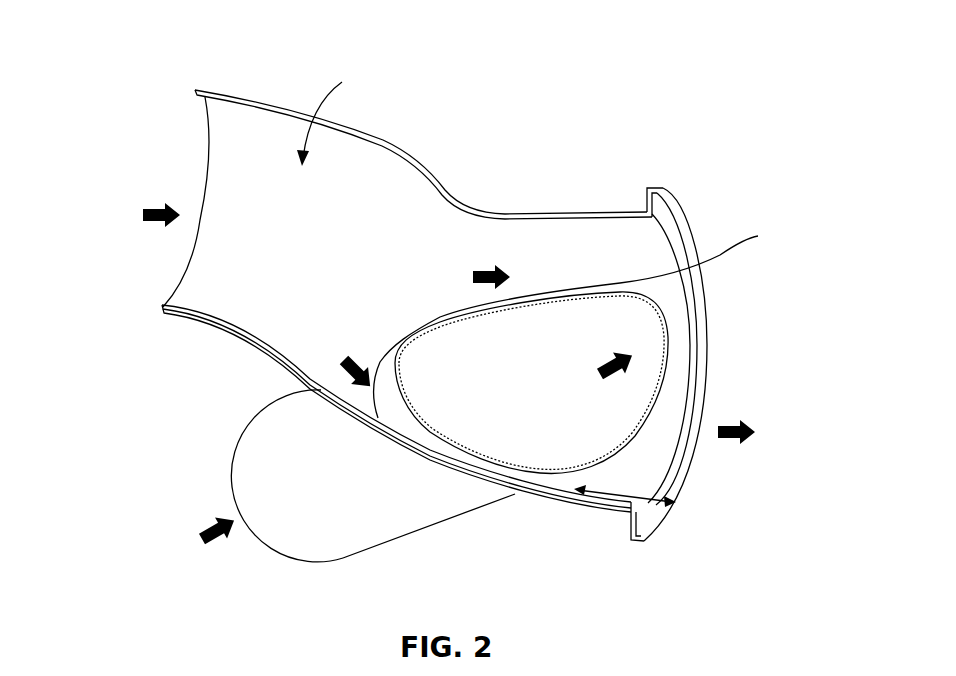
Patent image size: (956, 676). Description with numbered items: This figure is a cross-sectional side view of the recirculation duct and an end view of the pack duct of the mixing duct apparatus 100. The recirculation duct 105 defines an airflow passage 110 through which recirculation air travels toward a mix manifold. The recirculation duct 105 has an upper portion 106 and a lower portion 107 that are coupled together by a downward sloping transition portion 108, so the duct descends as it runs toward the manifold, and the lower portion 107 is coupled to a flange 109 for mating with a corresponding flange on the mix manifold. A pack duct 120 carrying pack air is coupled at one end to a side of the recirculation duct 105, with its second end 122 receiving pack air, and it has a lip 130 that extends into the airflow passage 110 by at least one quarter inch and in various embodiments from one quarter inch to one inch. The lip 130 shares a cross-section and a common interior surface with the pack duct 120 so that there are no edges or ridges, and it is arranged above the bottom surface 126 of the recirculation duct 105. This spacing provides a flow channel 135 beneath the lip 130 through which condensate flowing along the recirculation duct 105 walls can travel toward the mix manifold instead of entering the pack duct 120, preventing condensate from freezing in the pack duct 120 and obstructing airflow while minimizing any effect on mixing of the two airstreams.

The mixing duct apparatus 100 is at (702, 123).
The recirculation duct 105 is at (380, 137).
The upper portion 106 is at (225, 92).
The lower portion 107 is at (613, 208).
The downward sloping transition portion 108 is at (417, 158).
The flange 109 is at (707, 317).
The airflow passage 110 is at (344, 118).
The pack duct 120 is at (410, 537).
The second end 122 is at (280, 553).
The bottom surface 126 is at (430, 467).
The lip 130 is at (588, 348).
The flow channel 135 is at (593, 503).